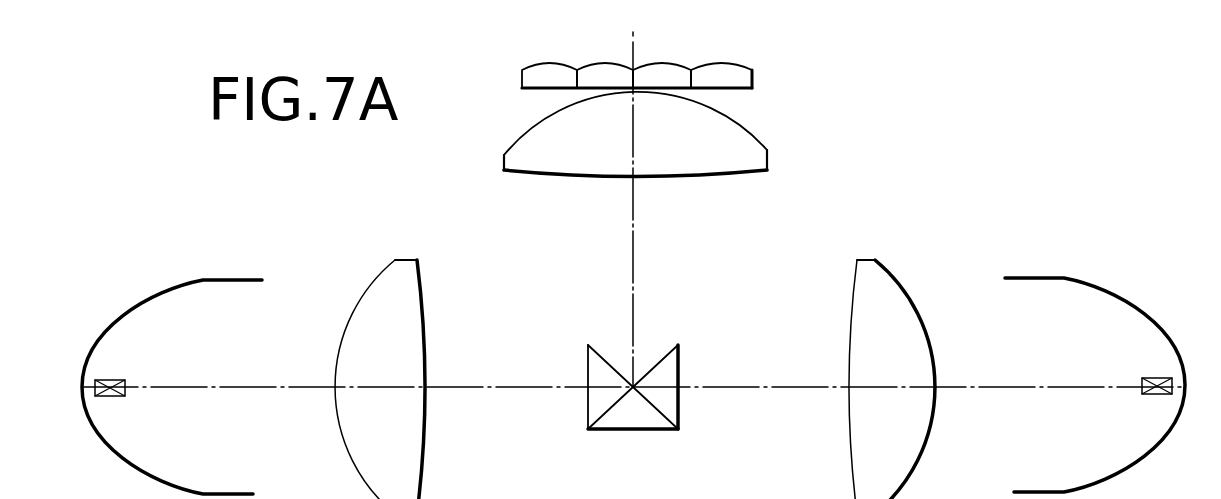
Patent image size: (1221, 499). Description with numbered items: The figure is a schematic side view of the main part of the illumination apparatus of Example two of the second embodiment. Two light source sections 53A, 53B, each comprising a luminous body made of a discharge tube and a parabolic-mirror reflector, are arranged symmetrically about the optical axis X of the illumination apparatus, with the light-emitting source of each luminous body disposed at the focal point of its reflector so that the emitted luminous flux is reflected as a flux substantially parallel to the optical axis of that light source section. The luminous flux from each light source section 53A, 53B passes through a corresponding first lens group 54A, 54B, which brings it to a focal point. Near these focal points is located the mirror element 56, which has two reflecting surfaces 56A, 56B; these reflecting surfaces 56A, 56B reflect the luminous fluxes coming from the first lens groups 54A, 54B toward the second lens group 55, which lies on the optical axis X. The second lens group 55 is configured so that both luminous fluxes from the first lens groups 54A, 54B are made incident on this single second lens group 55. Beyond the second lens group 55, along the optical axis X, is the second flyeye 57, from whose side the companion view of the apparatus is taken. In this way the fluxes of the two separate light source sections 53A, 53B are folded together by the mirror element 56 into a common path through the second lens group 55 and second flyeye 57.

The light source section 53A is at (188, 261).
The light source section 53B is at (1054, 255).
The first lens group 54A is at (405, 272).
The first lens group 54B is at (868, 271).
The second lens group 55 is at (769, 157).
The mirror element 56 is at (624, 392).
The reflecting surface 56A is at (662, 355).
The reflecting surface 56B is at (604, 352).
The second flyeye 57 is at (754, 86).
The optical axis X is at (636, 244).